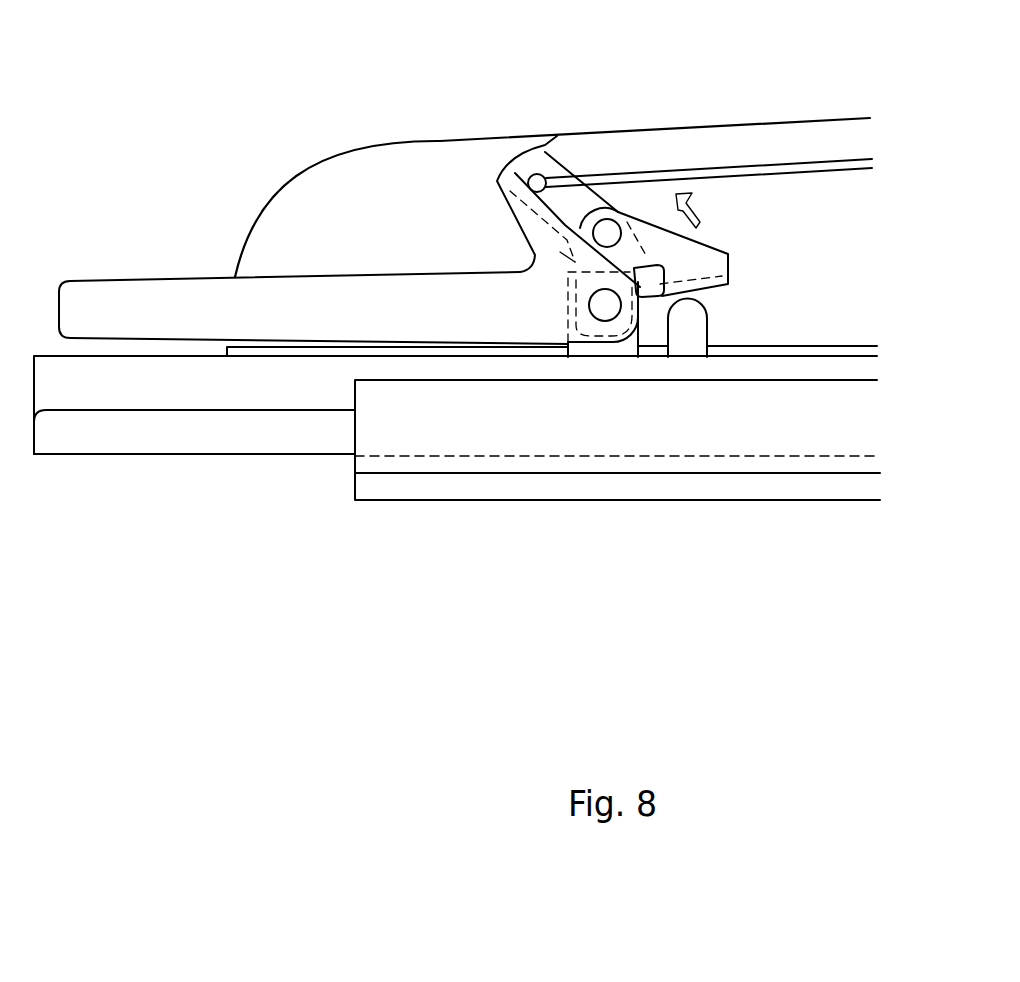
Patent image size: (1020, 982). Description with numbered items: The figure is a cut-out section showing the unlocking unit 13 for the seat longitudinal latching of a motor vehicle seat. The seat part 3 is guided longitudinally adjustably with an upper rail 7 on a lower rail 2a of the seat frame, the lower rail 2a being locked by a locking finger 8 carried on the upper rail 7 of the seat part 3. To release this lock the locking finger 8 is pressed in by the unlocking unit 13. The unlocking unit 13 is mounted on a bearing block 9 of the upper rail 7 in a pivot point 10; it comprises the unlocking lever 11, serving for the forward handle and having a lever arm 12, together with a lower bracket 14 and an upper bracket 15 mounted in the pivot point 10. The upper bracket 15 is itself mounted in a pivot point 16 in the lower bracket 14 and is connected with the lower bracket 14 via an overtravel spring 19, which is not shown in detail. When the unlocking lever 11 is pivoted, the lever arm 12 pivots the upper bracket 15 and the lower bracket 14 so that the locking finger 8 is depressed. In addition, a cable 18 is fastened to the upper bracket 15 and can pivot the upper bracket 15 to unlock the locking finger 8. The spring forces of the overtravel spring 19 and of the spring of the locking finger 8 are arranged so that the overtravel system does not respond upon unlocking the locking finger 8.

The lower rail 2a is at (528, 490).
The seat part 3 is at (310, 193).
The upper rail 7 is at (143, 445).
The locking finger 8 is at (703, 327).
The bearing block 9 is at (623, 350).
The pivot point 10 is at (605, 312).
The unlocking lever 11 is at (105, 288).
The lever arm 12 is at (522, 227).
The unlocking unit 13 is at (671, 110).
The lower bracket 14 is at (725, 262).
The upper bracket 15 is at (557, 135).
The pivot point 16 is at (568, 255).
The cable 18 is at (783, 178).
The overtravel spring 19 is at (700, 205).